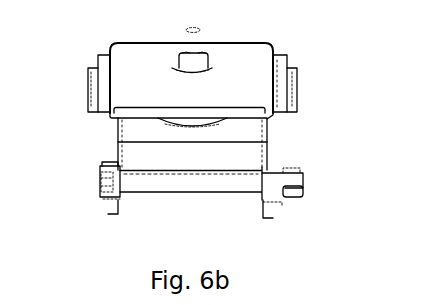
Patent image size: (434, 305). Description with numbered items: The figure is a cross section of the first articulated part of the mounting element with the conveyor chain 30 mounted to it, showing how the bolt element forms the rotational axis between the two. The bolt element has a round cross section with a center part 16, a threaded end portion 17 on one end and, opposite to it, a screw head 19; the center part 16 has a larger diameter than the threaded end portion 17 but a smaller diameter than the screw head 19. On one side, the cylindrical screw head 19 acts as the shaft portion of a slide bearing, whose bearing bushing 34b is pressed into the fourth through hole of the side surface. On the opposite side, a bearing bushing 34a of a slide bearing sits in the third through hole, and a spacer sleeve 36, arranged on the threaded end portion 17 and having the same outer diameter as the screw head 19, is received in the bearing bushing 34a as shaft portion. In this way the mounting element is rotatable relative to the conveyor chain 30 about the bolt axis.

The center part 16 is at (218, 170).
The spacer sleeve 36 is at (272, 172).
The threaded end portion 17 is at (288, 176).
The bearing bushing 34a is at (268, 203).
The bearing bushing 34b is at (118, 162).
The screw head 19 is at (103, 197).
The conveyor chain 30 is at (222, 178).